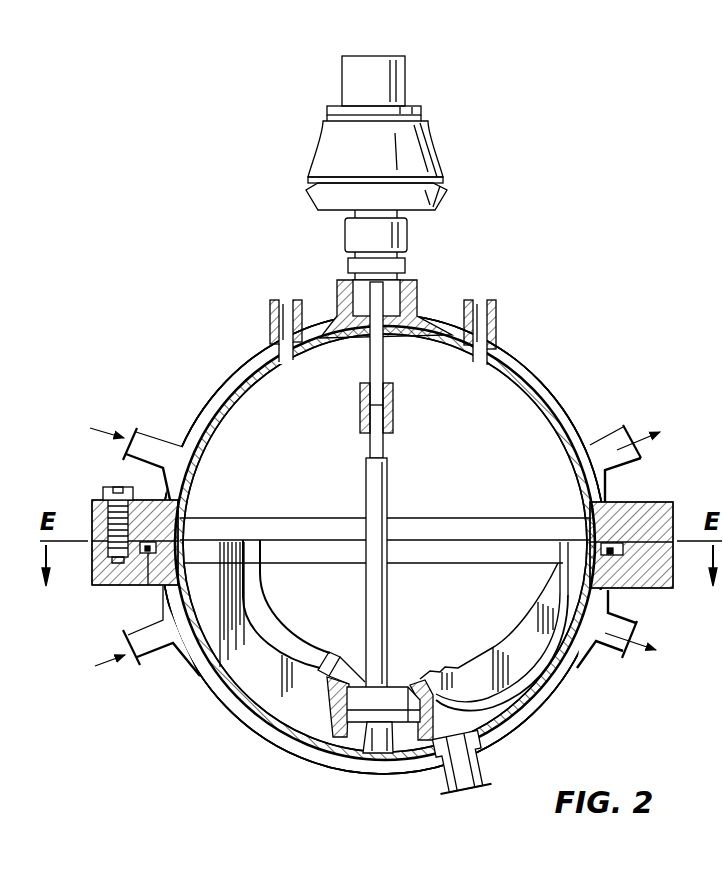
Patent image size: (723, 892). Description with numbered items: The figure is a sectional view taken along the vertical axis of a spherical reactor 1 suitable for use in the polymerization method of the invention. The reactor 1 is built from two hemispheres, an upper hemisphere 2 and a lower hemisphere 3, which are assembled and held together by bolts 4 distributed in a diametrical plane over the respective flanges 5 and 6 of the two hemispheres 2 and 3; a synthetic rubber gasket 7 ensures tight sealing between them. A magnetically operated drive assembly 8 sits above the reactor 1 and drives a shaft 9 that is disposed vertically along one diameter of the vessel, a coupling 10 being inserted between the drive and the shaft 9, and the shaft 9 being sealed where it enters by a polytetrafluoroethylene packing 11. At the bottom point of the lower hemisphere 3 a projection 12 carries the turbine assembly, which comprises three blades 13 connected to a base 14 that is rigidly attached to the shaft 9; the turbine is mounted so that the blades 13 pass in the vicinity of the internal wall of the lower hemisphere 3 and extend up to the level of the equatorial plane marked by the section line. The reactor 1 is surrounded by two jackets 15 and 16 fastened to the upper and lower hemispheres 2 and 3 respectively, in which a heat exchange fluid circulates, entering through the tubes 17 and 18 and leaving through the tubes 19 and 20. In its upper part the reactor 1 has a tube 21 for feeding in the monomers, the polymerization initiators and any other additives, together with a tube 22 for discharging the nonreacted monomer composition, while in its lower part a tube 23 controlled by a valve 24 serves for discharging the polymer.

The spherical reactor 1 is at (172, 703).
The upper hemisphere 2 is at (560, 378).
The lower hemisphere 3 is at (217, 712).
The bolts 4 is at (112, 518).
The flange 5 is at (652, 505).
The flange 6 is at (648, 588).
The synthetic rubber gasket 7 is at (152, 584).
The magnetically operated drive assembly 8 is at (426, 158).
The shaft 9 is at (380, 485).
The coupling 10 is at (394, 410).
The polytetrafluoroethylene packing 11 is at (360, 305).
The projection 12 is at (370, 752).
The blades 13 is at (266, 690).
The base 14 is at (392, 690).
The jacket 15 is at (220, 386).
The jacket 16 is at (305, 750).
The tube 17 is at (150, 443).
The tube 18 is at (152, 644).
The tube 19 is at (604, 447).
The tube 20 is at (626, 648).
The tube 21 is at (271, 318).
The tube 22 is at (497, 318).
The tube 23 is at (486, 764).
The valve 24 is at (460, 788).